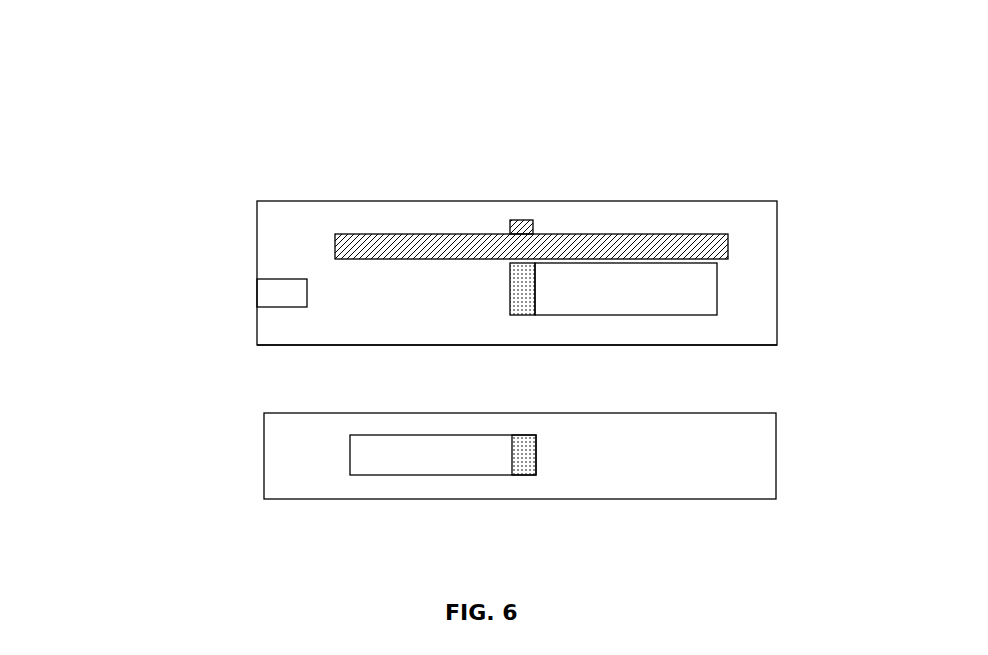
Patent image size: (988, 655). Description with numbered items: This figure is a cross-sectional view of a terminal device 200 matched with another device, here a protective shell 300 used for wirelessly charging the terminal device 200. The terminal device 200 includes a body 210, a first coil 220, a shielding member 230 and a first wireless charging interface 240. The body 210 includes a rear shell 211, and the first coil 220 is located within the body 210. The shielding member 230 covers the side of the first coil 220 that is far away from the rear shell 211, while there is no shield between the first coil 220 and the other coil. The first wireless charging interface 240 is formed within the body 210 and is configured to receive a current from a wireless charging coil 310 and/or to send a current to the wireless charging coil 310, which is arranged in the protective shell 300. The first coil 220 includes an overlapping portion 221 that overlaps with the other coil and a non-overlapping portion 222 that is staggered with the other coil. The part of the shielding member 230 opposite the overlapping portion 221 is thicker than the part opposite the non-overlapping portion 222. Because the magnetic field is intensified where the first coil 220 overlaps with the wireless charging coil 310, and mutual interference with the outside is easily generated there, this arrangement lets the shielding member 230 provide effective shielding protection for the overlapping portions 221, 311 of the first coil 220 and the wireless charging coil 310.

The terminal device 200 is at (255, 175).
The body 210 is at (753, 297).
The rear shell 211 is at (283, 347).
The first coil 220 is at (633, 290).
The overlapping portion 221 is at (520, 290).
The non-overlapping portion 222 is at (598, 298).
The shielding member 230 is at (572, 250).
The first wireless charging interface 240 is at (270, 279).
The protective shell 300 is at (542, 490).
The wireless charging coil 310 is at (370, 462).
The overlapping portion 311 is at (537, 455).